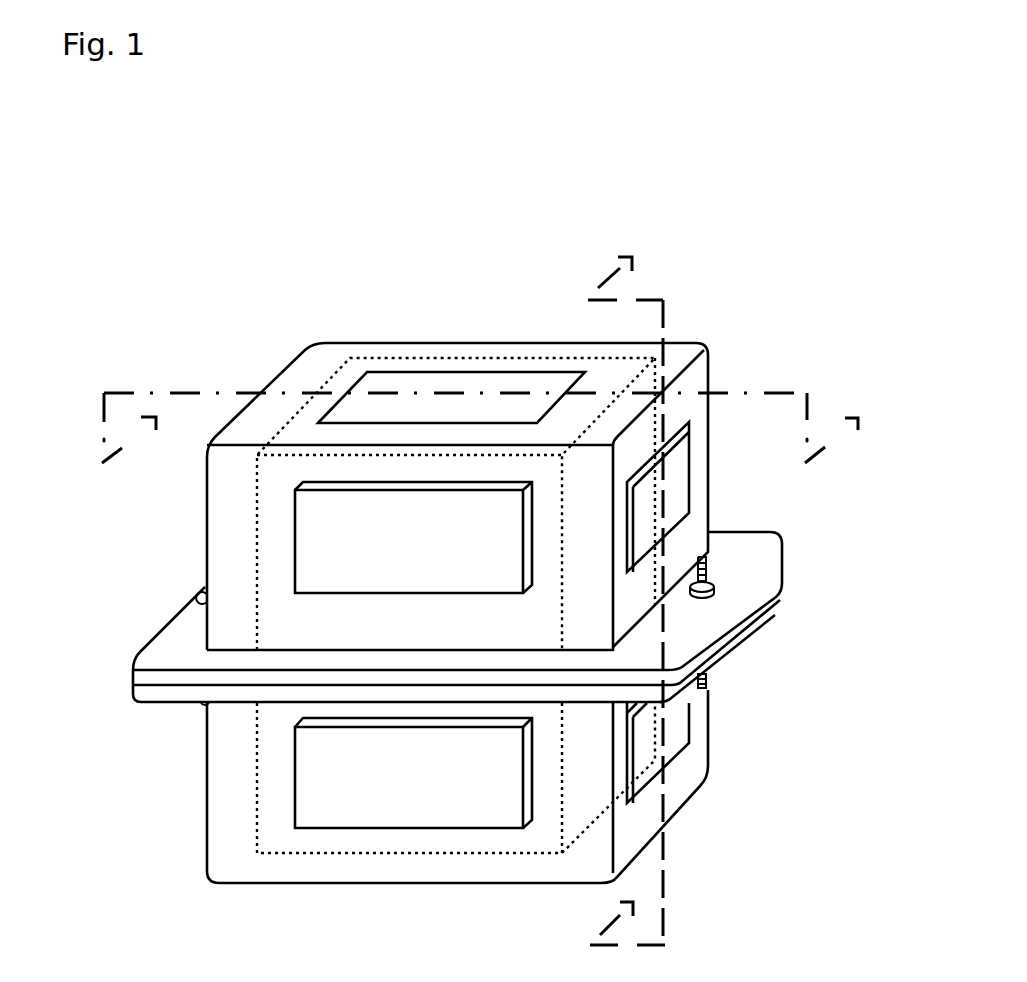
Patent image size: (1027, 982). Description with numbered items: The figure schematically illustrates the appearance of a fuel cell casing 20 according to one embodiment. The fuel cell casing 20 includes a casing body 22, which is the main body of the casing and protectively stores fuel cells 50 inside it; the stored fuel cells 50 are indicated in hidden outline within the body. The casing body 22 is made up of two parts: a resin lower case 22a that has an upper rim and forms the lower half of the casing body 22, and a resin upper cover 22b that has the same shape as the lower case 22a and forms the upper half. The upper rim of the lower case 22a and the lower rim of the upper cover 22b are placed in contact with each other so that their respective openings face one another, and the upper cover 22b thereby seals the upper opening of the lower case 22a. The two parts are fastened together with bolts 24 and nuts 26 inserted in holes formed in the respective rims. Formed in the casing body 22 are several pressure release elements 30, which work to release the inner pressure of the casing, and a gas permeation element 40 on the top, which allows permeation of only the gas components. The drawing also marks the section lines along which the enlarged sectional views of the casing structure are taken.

The fuel cell casing 20 is at (646, 196).
The casing body 22 is at (79, 590).
The lower case 22a is at (220, 758).
The upper cover 22b is at (220, 541).
The bolts 24 is at (708, 560).
The nuts 26 is at (707, 598).
The pressure release elements 30 is at (319, 541).
The gas permeation element 40 is at (407, 407).
The fuel cells 50 is at (460, 857).